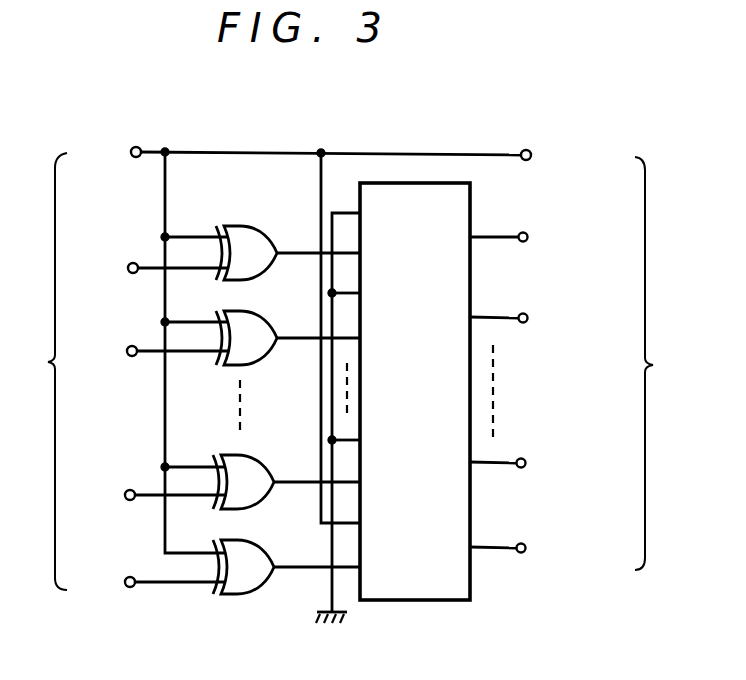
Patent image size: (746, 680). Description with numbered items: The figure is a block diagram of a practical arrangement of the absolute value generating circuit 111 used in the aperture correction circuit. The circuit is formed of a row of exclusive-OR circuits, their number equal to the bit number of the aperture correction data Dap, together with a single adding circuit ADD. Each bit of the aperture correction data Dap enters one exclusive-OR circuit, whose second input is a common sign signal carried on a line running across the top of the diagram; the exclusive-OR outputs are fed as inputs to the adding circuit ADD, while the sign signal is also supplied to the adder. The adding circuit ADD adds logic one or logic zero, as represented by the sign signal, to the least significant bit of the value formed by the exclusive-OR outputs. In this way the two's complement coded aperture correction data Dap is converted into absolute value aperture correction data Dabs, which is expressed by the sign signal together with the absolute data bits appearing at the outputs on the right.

The absolute value generating circuit 111 is at (395, 150).
The adding circuit ADD is at (417, 602).
The aperture correction data Dap is at (34, 371).
The absolute value aperture correction data Dabs is at (671, 363).